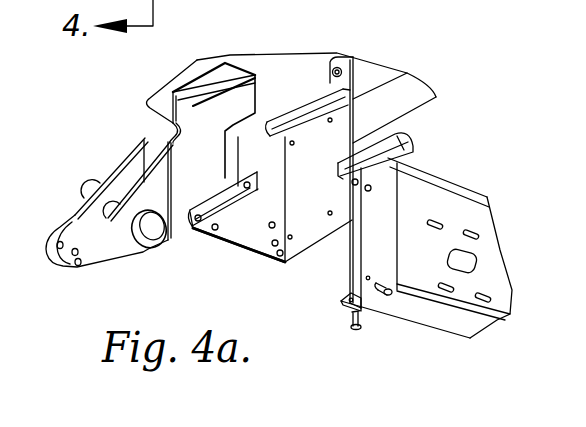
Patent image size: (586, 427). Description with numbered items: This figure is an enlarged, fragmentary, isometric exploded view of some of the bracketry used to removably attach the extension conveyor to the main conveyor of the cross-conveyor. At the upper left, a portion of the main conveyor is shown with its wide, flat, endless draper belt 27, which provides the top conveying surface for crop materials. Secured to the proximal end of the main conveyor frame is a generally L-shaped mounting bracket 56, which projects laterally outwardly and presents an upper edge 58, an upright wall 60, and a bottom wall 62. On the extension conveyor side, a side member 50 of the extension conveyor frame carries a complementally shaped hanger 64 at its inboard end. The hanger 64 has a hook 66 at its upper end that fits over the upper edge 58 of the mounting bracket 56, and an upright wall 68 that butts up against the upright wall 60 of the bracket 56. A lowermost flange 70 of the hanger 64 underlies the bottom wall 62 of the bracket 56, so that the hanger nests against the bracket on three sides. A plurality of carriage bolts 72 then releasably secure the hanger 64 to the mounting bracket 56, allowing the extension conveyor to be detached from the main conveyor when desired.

The draper belt 27 is at (273, 68).
The side member 50 is at (456, 205).
The mounting bracket 56 is at (262, 266).
The upper edge 58 is at (318, 100).
The upright wall 60 is at (306, 237).
The bottom wall 62 is at (245, 238).
The hanger 64 is at (340, 283).
The hook 66 is at (388, 147).
The upright wall 68 is at (370, 242).
The lowermost flange 70 is at (350, 304).
The carriage bolts 72 is at (371, 190).